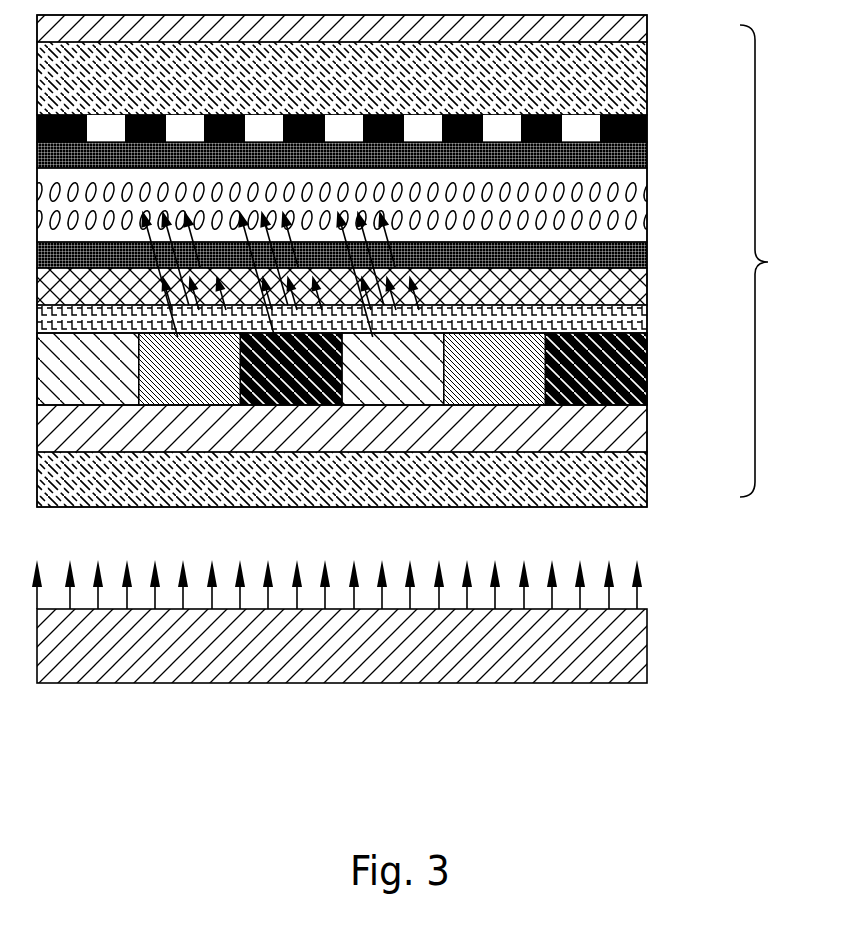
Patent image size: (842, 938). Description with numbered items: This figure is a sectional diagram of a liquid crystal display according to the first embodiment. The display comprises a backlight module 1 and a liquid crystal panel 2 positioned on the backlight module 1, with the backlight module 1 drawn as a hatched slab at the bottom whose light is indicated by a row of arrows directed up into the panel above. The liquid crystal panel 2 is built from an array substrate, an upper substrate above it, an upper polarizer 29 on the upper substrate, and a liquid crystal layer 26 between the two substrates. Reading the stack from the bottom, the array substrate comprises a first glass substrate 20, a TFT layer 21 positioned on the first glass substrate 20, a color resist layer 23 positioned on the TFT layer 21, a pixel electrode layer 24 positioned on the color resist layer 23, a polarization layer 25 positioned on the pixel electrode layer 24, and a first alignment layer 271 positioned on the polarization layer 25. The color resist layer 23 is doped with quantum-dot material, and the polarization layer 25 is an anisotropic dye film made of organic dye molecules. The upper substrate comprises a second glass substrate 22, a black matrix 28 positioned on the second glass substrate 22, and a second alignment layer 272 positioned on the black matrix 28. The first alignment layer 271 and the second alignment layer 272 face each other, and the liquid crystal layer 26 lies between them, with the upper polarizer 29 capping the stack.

The backlight module 1 is at (595, 653).
The liquid crystal panel 2 is at (771, 261).
The first glass substrate 20 is at (595, 473).
The TFT layer 21 is at (595, 425).
The second glass substrate 22 is at (597, 68).
The color resist layer 23 is at (595, 362).
The pixel electrode layer 24 is at (593, 325).
The polarization layer 25 is at (595, 290).
The liquid crystal layer 26 is at (595, 205).
The first alignment layer 271 is at (595, 250).
The second alignment layer 272 is at (595, 152).
The black matrix 28 is at (575, 125).
The upper polarizer 29 is at (598, 21).